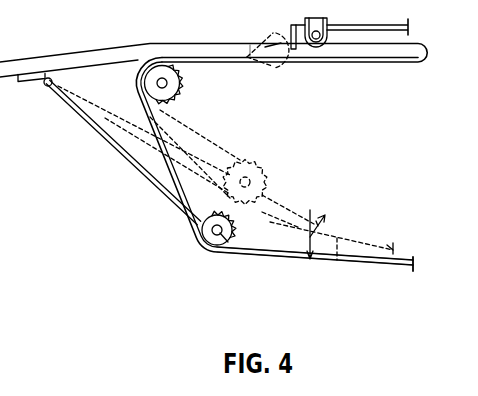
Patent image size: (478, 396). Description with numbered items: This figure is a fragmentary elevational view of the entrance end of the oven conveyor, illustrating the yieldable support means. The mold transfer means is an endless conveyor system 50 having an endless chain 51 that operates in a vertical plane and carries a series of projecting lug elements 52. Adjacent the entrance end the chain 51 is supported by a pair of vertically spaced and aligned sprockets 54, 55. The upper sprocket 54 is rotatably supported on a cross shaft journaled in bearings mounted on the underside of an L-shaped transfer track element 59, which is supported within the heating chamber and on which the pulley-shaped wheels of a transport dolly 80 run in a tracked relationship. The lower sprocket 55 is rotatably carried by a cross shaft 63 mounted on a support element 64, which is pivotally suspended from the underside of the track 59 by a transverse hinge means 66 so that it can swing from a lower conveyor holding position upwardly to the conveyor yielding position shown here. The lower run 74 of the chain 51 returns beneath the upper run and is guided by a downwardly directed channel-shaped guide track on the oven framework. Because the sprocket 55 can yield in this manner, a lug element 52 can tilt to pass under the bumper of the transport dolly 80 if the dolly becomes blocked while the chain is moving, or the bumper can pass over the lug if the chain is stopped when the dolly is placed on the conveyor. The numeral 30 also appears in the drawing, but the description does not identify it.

The frame 30 is at (12, 257).
The endless conveyor system 50 is at (221, 42).
The endless chain 51 is at (331, 229).
The lug element 52 is at (281, 58).
The sprocket 54 is at (180, 99).
The sprocket 55 is at (235, 228).
The transfer track element 59 is at (170, 43).
The cross shaft 63 is at (271, 233).
The support element 64 is at (125, 165).
The transverse hinge means 66 is at (44, 86).
The lower run 74 is at (327, 265).
The transport dolly 80 is at (339, 27).